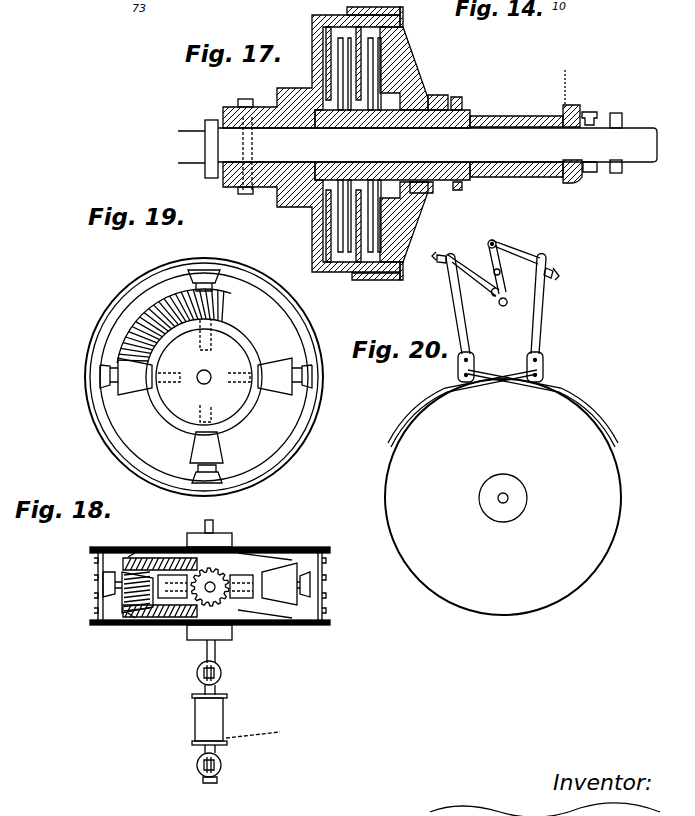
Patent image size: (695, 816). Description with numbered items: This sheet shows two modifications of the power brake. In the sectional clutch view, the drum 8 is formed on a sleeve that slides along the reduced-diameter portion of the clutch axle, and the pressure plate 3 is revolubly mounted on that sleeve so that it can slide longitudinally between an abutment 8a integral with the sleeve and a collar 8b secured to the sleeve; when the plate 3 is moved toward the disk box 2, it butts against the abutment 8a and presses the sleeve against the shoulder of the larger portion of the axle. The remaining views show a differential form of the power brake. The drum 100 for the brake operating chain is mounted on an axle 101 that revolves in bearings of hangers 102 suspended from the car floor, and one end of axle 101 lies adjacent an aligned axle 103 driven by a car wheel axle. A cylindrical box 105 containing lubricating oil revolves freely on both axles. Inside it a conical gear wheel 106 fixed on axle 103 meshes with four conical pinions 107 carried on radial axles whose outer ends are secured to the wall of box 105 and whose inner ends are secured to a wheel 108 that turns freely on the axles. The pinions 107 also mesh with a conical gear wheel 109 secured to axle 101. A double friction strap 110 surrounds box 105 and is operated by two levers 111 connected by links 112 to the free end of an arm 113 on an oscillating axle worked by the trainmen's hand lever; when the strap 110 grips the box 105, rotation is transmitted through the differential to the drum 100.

In FIG. 17, the disk box 2 is at (312, 40).
In FIG. 17, the pressure plate 3 is at (406, 72).
In FIG. 17, the drum 8 is at (500, 120).
In FIG. 17, the abutment 8a is at (418, 98).
In FIG. 17, the collar 8b is at (461, 99).
In FIG. 18, the drum 100 is at (236, 723).
In FIG. 18, the axle 101 is at (216, 693).
In FIG. 18, the hangers 102 is at (197, 673).
In FIG. 18, the axle 103 is at (213, 526).
In FIG. 19, the cylindrical box 105 is at (126, 300).
In FIG. 18, the cylindrical box 105 is at (322, 567).
In FIG. 20, the cylindrical box 105 is at (503, 497).
In FIG. 19, the conical gear wheel 106 is at (242, 328).
In FIG. 18, the conical gear wheel 106 is at (138, 562).
In FIG. 19, the conical pinions 107 is at (210, 292).
In FIG. 18, the conical pinions 107 is at (127, 600).
In FIG. 19, the wheel 108 is at (166, 362).
In FIG. 18, the wheel 108 is at (238, 582).
In FIG. 18, the conical gear wheel 109 is at (250, 610).
In FIG. 20, the double friction strap 110 is at (501, 362).
In FIG. 20, the levers 111 is at (455, 300).
In FIG. 20, the links 112 is at (510, 250).
In FIG. 20, the arm 113 is at (503, 280).